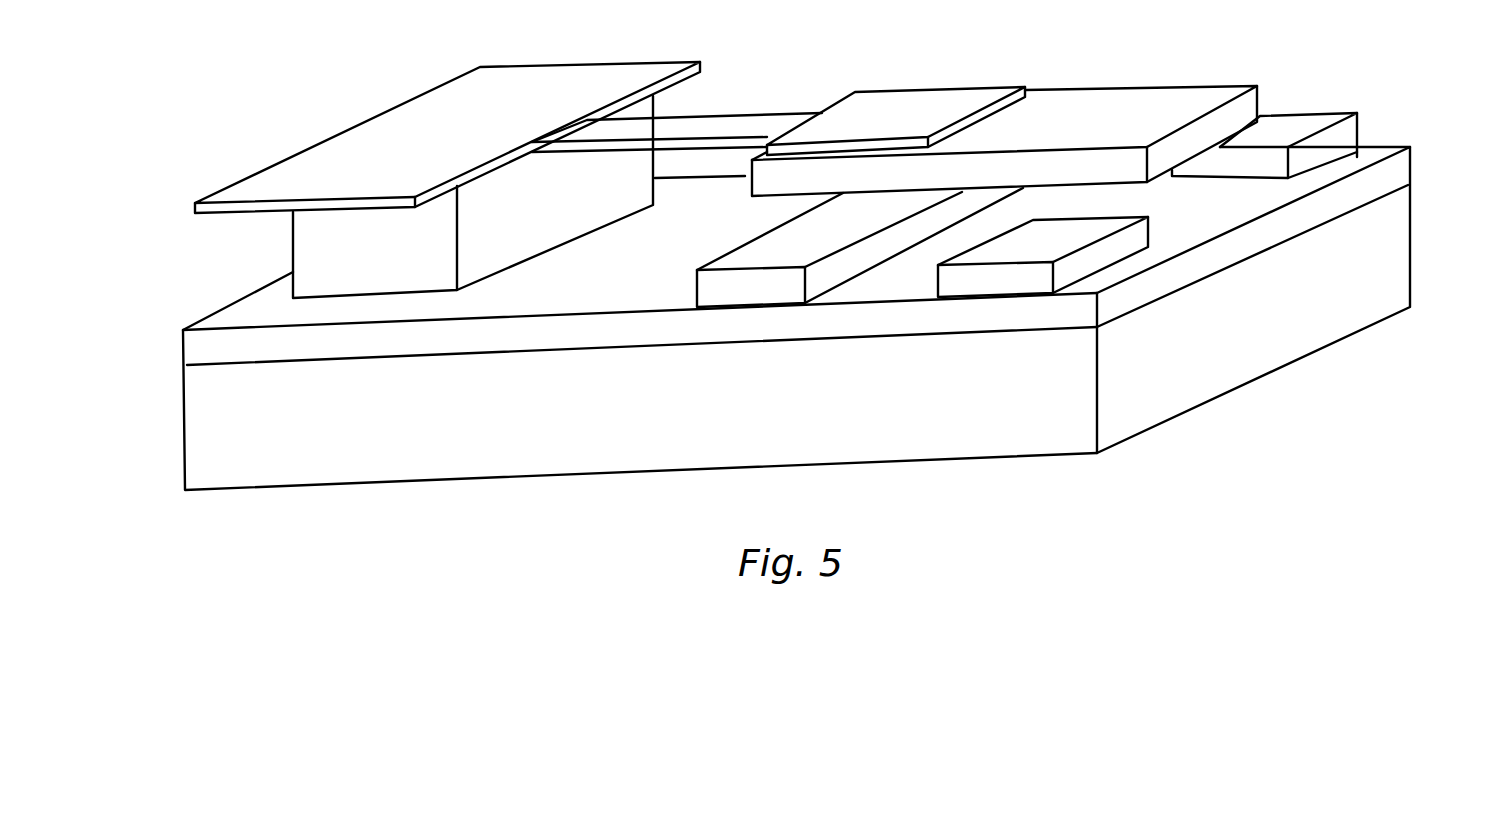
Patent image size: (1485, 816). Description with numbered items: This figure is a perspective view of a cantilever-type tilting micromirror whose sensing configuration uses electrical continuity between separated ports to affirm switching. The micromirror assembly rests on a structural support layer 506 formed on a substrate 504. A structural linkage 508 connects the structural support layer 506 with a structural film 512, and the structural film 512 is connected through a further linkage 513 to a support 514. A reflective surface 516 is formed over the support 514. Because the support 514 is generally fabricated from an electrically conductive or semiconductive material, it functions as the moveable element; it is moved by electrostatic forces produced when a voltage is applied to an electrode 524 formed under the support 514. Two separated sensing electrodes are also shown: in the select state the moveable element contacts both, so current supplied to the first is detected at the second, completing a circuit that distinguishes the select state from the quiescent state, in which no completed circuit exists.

The substrate 504 is at (1208, 377).
The structural support layer 506 is at (1393, 182).
The structural linkage 508 is at (302, 248).
The structural film 512 is at (323, 165).
The further linkage 513 is at (732, 122).
The support 514 is at (1130, 105).
The reflective surface 516 is at (908, 102).
The electrode 524 is at (755, 255).